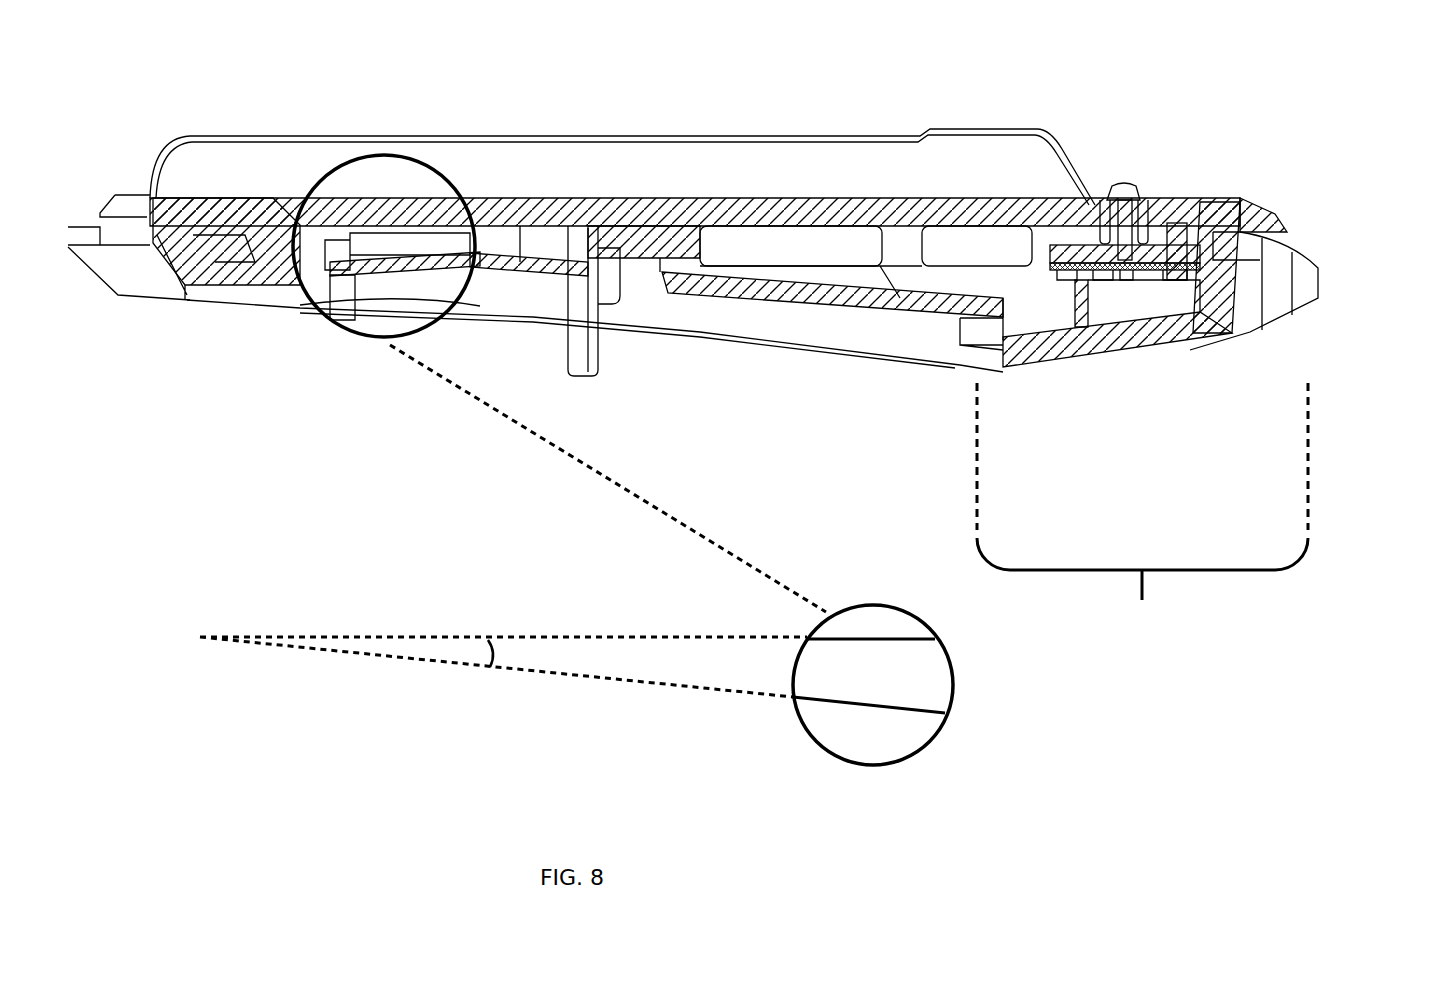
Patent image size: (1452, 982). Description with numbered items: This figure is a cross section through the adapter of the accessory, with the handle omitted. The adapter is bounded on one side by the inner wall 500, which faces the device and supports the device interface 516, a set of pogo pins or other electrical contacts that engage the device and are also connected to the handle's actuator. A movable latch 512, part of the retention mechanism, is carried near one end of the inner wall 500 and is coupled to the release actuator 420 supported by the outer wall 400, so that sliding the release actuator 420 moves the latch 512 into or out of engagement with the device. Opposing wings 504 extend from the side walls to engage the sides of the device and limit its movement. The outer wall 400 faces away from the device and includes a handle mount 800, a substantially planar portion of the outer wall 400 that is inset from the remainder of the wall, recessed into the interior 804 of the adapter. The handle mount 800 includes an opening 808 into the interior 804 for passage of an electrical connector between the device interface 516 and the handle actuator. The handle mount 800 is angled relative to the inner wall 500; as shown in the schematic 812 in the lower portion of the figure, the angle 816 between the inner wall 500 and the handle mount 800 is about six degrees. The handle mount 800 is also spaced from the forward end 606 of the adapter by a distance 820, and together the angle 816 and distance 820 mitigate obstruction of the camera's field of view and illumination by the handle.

The outer wall 400 is at (1042, 362).
The release actuator 420 is at (215, 280).
The inner wall 500 is at (652, 215).
The wings 504 is at (952, 148).
The latch 512 is at (116, 205).
The device interface 516 is at (1125, 180).
The forward end 606 is at (1318, 288).
The handle mount 800 is at (820, 308).
The interior 804 is at (903, 265).
The opening 808 is at (537, 270).
The schematic 812 is at (306, 752).
The angle 816 is at (437, 648).
The distance 820 is at (1142, 510).